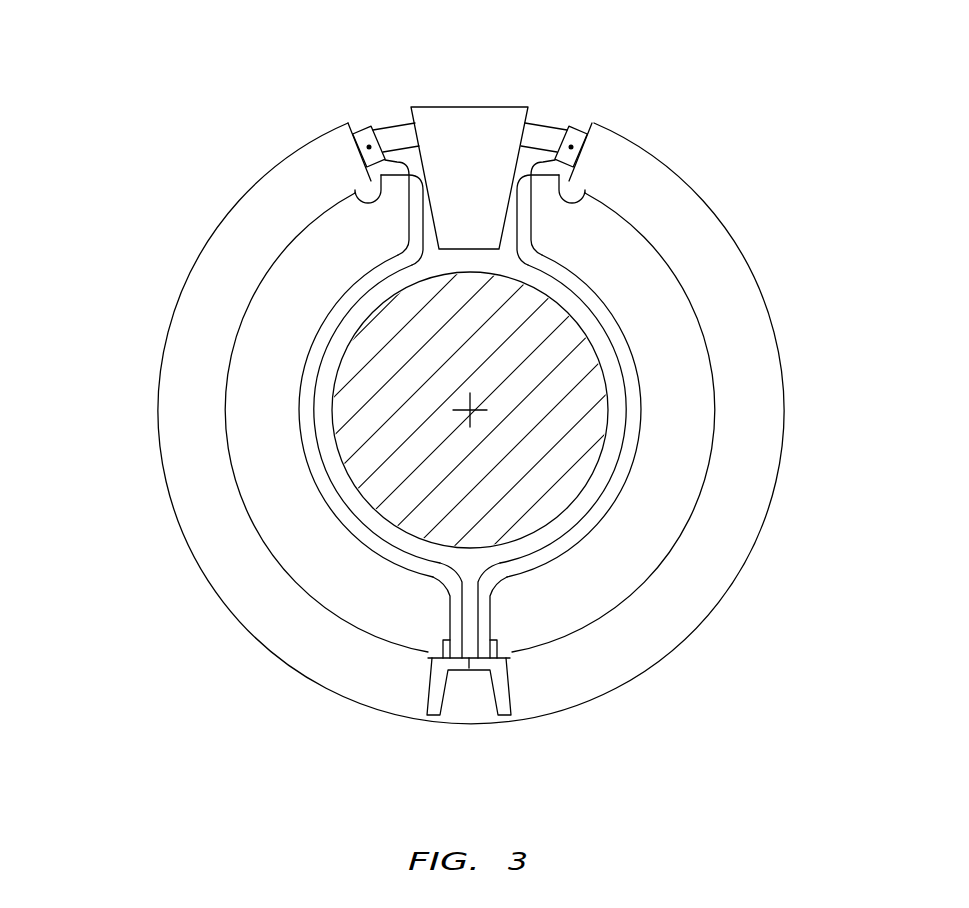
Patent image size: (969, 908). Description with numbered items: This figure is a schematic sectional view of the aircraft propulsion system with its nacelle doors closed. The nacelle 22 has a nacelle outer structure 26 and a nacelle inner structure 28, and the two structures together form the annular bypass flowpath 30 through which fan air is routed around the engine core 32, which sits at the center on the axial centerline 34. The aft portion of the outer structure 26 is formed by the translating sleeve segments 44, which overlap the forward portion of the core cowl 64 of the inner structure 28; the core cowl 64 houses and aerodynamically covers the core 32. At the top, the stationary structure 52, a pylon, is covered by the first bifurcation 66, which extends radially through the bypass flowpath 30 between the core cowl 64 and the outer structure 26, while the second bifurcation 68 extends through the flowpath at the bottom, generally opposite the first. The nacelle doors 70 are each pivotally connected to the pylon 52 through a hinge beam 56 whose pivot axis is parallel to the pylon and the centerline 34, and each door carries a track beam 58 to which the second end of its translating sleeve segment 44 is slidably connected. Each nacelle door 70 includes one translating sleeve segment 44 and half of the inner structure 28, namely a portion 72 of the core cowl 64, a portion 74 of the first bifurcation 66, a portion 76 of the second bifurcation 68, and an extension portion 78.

The nacelle 22 is at (672, 170).
The nacelle outer structure 26 is at (753, 262).
The nacelle inner structure 28 is at (650, 405).
The bypass flowpath 30 is at (275, 437).
The core 32 is at (558, 516).
The axial centerline 34 is at (470, 413).
The translating sleeve segment 44 is at (180, 525).
The stationary structure 52 is at (461, 106).
The hinge beam 56 is at (358, 130).
The track beam 58 is at (442, 700).
The core cowl 64 is at (342, 549).
The first bifurcation 66 is at (379, 217).
The second bifurcation 68 is at (441, 628).
The nacelle door 70 is at (769, 324).
The portion of the core cowl 72 is at (306, 356).
The portion of the first bifurcation 74 is at (408, 222).
The portion of the second bifurcation 76 is at (443, 613).
The extension portion 78 is at (365, 196).